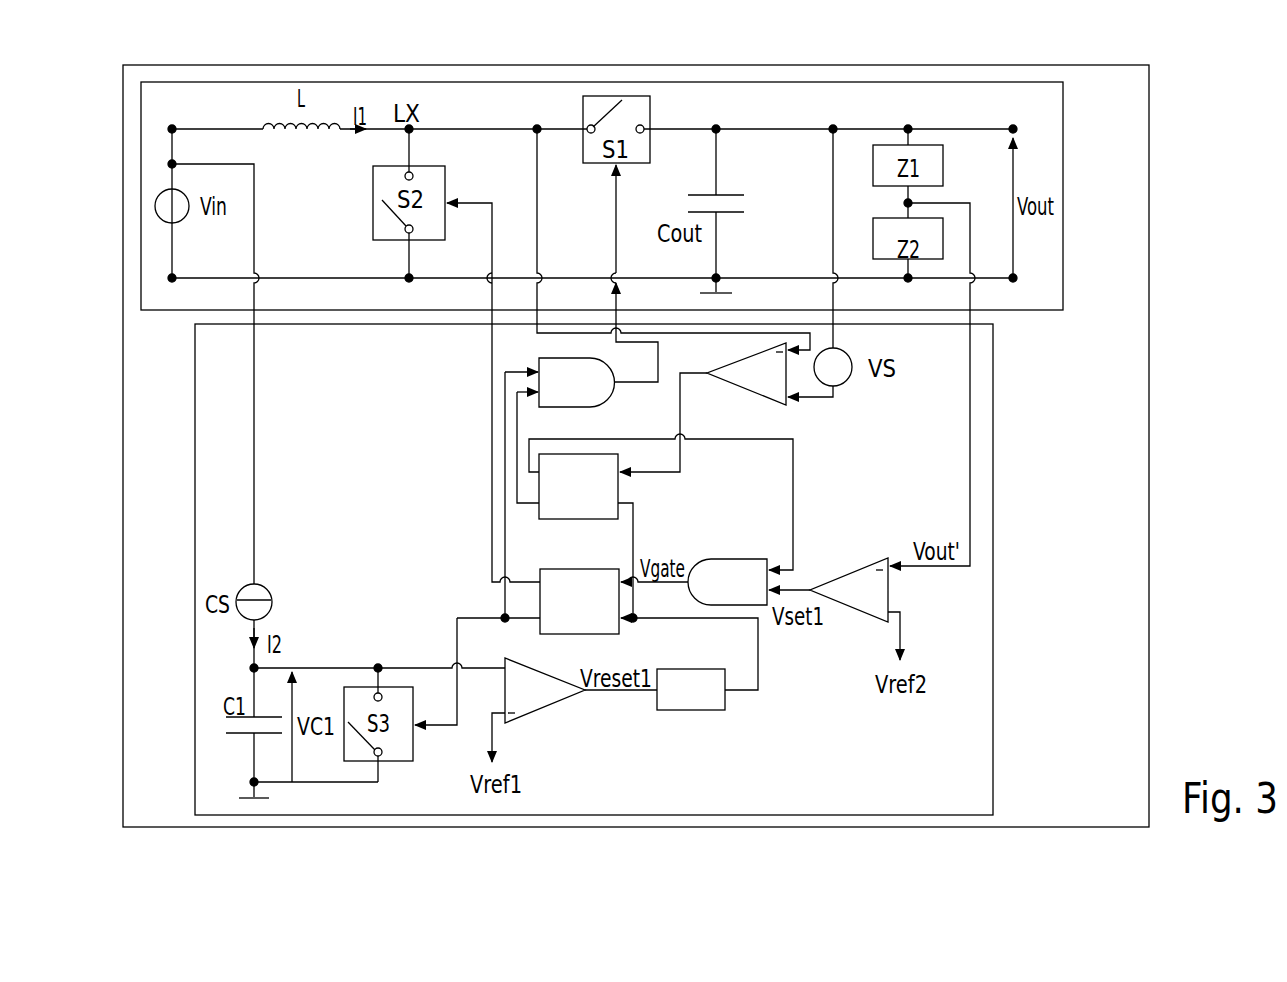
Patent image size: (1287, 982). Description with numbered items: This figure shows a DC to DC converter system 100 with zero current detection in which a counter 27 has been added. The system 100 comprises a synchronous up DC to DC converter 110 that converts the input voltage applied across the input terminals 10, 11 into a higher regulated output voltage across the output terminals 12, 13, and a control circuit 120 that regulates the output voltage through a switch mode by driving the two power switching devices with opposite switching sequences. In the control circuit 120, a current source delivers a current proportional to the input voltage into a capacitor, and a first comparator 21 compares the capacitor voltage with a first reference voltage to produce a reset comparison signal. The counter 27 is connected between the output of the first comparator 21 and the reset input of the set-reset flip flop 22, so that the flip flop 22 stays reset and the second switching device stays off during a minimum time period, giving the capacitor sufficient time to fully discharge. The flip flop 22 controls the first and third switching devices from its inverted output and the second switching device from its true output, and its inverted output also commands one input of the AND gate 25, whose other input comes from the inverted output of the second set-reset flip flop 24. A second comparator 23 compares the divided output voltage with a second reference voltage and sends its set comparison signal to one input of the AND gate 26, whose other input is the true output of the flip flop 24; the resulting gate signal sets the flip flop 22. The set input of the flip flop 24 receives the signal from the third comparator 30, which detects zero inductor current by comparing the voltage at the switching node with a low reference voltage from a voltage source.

The DC to DC converter system 100 is at (1151, 436).
The synchronous up DC to DC converter 110 is at (1064, 172).
The control circuit 120 is at (994, 575).
The input terminal 10 is at (174, 115).
The input terminal 11 is at (174, 291).
The output terminal 12 is at (1014, 114).
The output terminal 13 is at (1014, 290).
The first comparator 21 is at (545, 690).
The set-reset flip flop 22 is at (579, 602).
The second comparator 23 is at (850, 590).
The second set-reset flip flop 24 is at (578, 488).
The AND gate 25 is at (576, 382).
The AND gate 26 is at (727, 582).
The counter 27 is at (691, 689).
The third comparator 30 is at (748, 374).